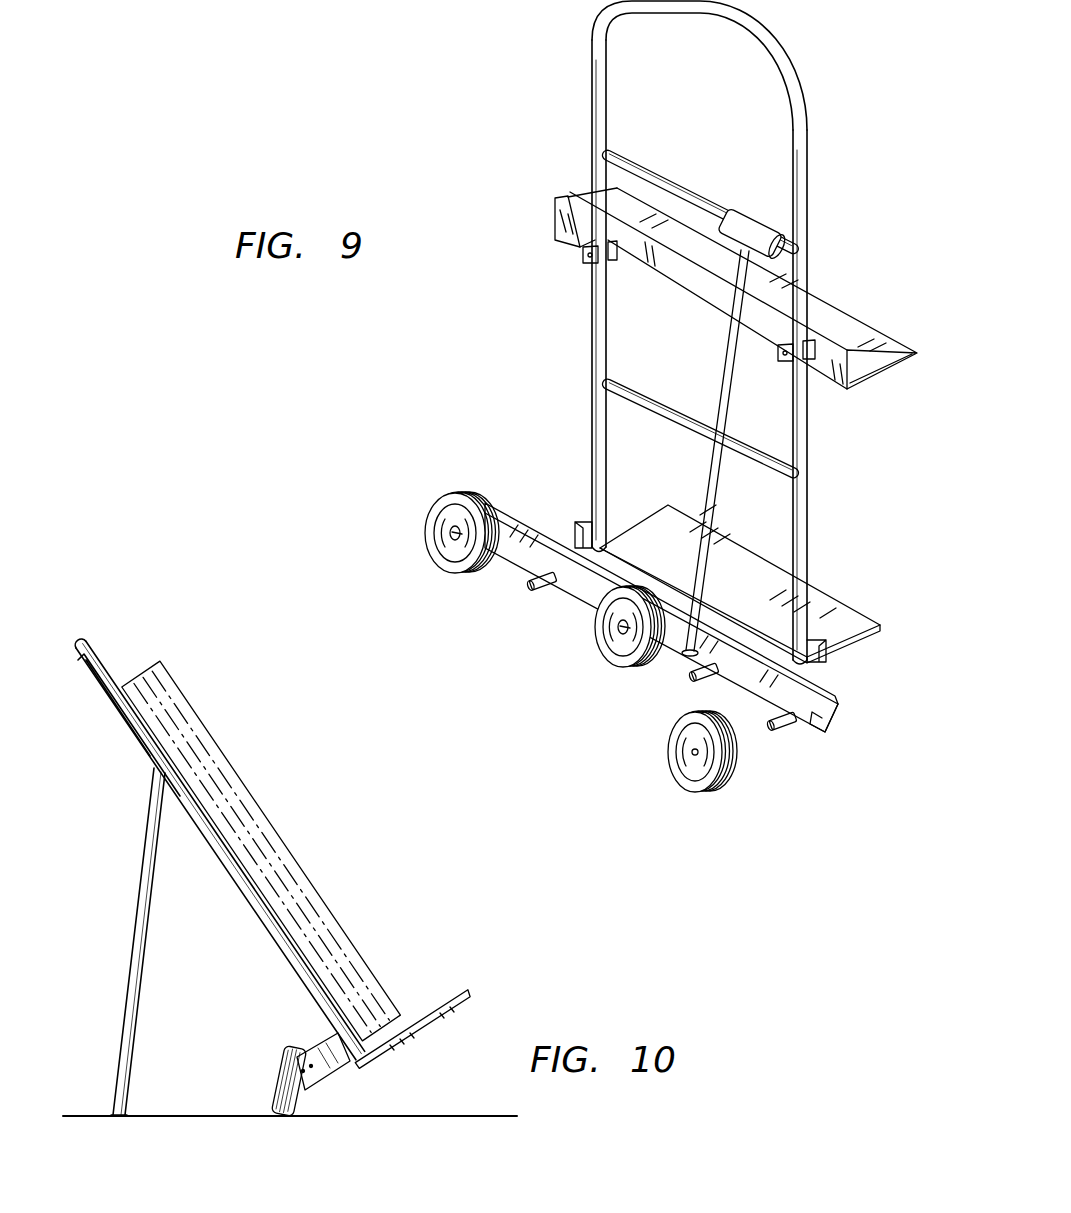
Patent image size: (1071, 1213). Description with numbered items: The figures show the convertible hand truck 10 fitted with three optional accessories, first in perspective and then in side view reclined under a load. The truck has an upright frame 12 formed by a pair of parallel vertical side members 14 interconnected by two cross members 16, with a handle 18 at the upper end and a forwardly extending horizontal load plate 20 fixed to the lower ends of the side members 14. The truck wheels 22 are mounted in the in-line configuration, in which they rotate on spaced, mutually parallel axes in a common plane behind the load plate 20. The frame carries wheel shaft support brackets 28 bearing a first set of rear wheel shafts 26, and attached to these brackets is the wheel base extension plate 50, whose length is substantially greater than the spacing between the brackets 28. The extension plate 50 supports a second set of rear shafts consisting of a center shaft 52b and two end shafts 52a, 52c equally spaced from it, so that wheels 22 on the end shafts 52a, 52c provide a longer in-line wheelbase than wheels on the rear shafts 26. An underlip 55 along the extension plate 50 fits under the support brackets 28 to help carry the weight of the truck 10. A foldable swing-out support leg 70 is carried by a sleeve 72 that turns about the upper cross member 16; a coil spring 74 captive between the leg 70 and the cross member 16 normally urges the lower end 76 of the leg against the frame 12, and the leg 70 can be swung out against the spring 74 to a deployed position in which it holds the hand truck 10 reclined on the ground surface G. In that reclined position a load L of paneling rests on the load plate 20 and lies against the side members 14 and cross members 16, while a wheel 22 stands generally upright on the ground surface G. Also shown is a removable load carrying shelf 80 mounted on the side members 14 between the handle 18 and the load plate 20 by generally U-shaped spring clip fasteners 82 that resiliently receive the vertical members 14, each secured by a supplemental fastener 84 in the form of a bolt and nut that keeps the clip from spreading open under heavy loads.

In FIG. 9, the convertible hand truck 10 is at (850, 133).
In FIG. 9, the upright frame 12 is at (811, 453).
In FIG. 10, the upright frame 12 is at (216, 853).
In FIG. 9, the vertical side members 14 is at (591, 328).
In FIG. 10, the vertical side members 14 is at (272, 937).
In FIG. 9, the cross members 16 is at (660, 171).
In FIG. 9, the handle 18 is at (775, 41).
In FIG. 10, the handle 18 is at (77, 643).
In FIG. 9, the load plate 20 is at (840, 625).
In FIG. 10, the load plate 20 is at (455, 990).
In FIG. 9, the truck wheels 22 is at (456, 568).
In FIG. 10, the truck wheels 22 is at (268, 1072).
In FIG. 9, the rear wheel shafts 26 is at (529, 586).
In FIG. 9, the brackets 28 is at (584, 520).
In FIG. 10, the brackets 28 is at (343, 1064).
In FIG. 9, the wheel base extension plate 50 is at (535, 523).
In FIG. 9, the end shaft 52a is at (446, 538).
In FIG. 9, the center shaft 52b is at (611, 656).
In FIG. 9, the end shaft 52c is at (788, 722).
In FIG. 9, the underlip 55 is at (834, 716).
In FIG. 9, the swing-out support leg 70 is at (723, 370).
In FIG. 10, the swing-out support leg 70 is at (137, 897).
In FIG. 9, the sleeve 72 is at (750, 212).
In FIG. 9, the coil spring 74 is at (720, 247).
In FIG. 9, the lower end of support leg 76 is at (685, 658).
In FIG. 10, the lower end of support leg 76 is at (122, 1112).
In FIG. 9, the load carrying shelf 80 is at (863, 318).
In FIG. 9, the fasteners 82 is at (572, 208).
In FIG. 9, the supplemental fasteners 84 is at (583, 257).
In FIG. 10, the ground surface G is at (95, 1113).
In FIG. 10, the load L is at (318, 868).